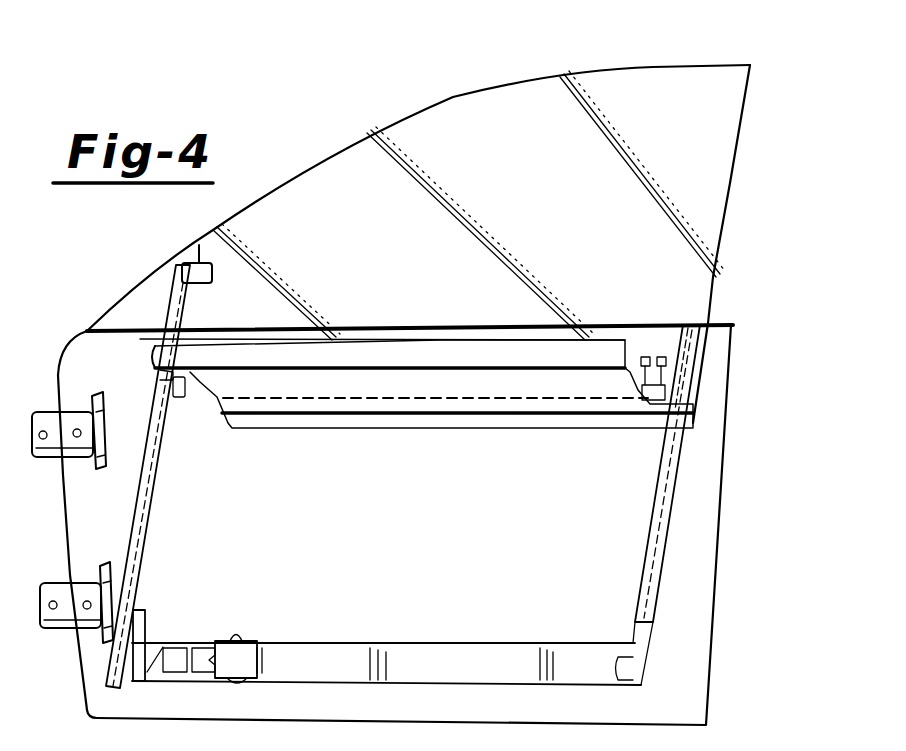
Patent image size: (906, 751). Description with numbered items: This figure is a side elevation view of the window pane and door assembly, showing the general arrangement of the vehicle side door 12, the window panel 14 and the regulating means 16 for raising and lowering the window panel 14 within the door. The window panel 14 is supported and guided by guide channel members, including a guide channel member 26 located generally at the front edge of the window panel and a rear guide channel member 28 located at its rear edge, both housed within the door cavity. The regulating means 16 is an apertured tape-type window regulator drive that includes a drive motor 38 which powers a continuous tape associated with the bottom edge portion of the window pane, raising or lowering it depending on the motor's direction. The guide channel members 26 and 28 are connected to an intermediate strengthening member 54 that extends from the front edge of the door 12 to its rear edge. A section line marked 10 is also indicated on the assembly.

The window regulator assembly (section line) 10 is at (648, 447).
The vehicle side door 12 is at (703, 448).
The window panel 14 is at (715, 187).
The regulating means 16 is at (362, 632).
The guide channel member 26 is at (157, 515).
The rear guide channel member 28 is at (663, 565).
The drive motor 38 is at (243, 642).
The intermediate strengthening member 54 is at (388, 392).